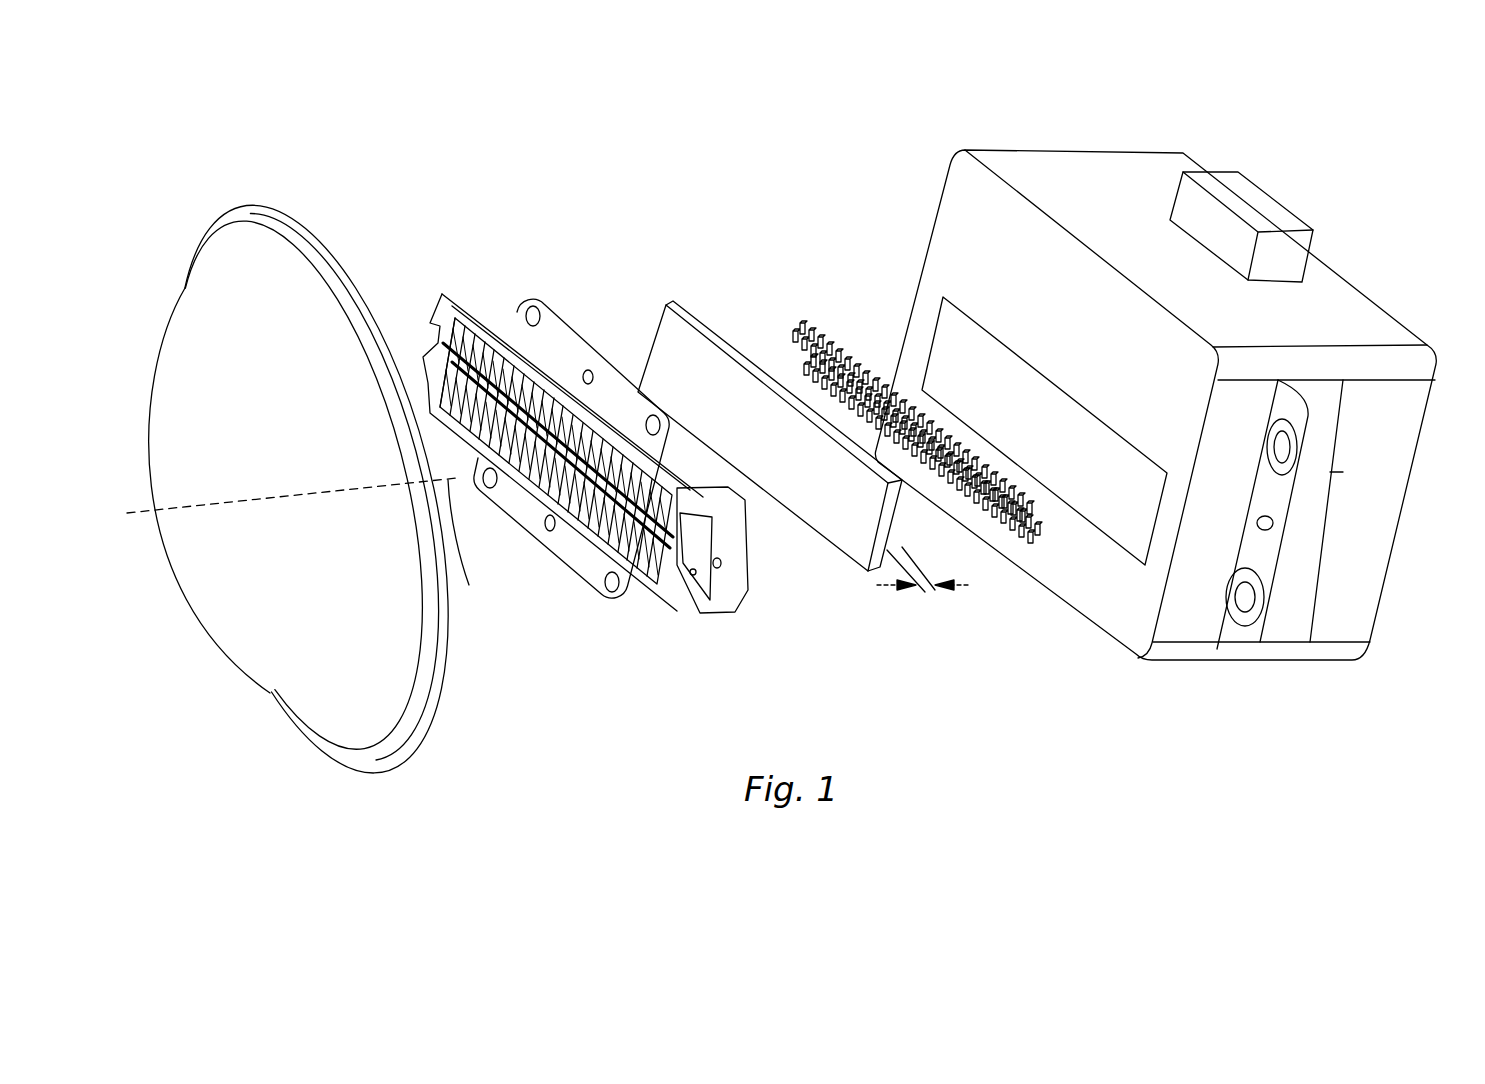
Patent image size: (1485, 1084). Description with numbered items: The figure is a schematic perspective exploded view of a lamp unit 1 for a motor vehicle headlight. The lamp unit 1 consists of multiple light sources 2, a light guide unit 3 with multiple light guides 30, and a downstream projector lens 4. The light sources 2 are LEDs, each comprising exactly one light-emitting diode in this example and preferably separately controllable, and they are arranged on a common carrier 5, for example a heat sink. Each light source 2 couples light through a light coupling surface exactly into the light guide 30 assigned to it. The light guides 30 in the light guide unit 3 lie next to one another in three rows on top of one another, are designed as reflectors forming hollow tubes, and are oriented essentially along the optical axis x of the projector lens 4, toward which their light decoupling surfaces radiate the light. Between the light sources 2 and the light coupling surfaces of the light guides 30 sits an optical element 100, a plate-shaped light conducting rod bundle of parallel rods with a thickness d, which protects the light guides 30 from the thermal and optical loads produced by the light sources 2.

The lamp unit 1 is at (462, 128).
The light sources 2 is at (803, 327).
The light guide unit 3 is at (585, 481).
The projector lens 4 is at (265, 541).
The common carrier 5 is at (1348, 577).
The light guides 30 is at (472, 347).
The optical element 100 is at (828, 632).